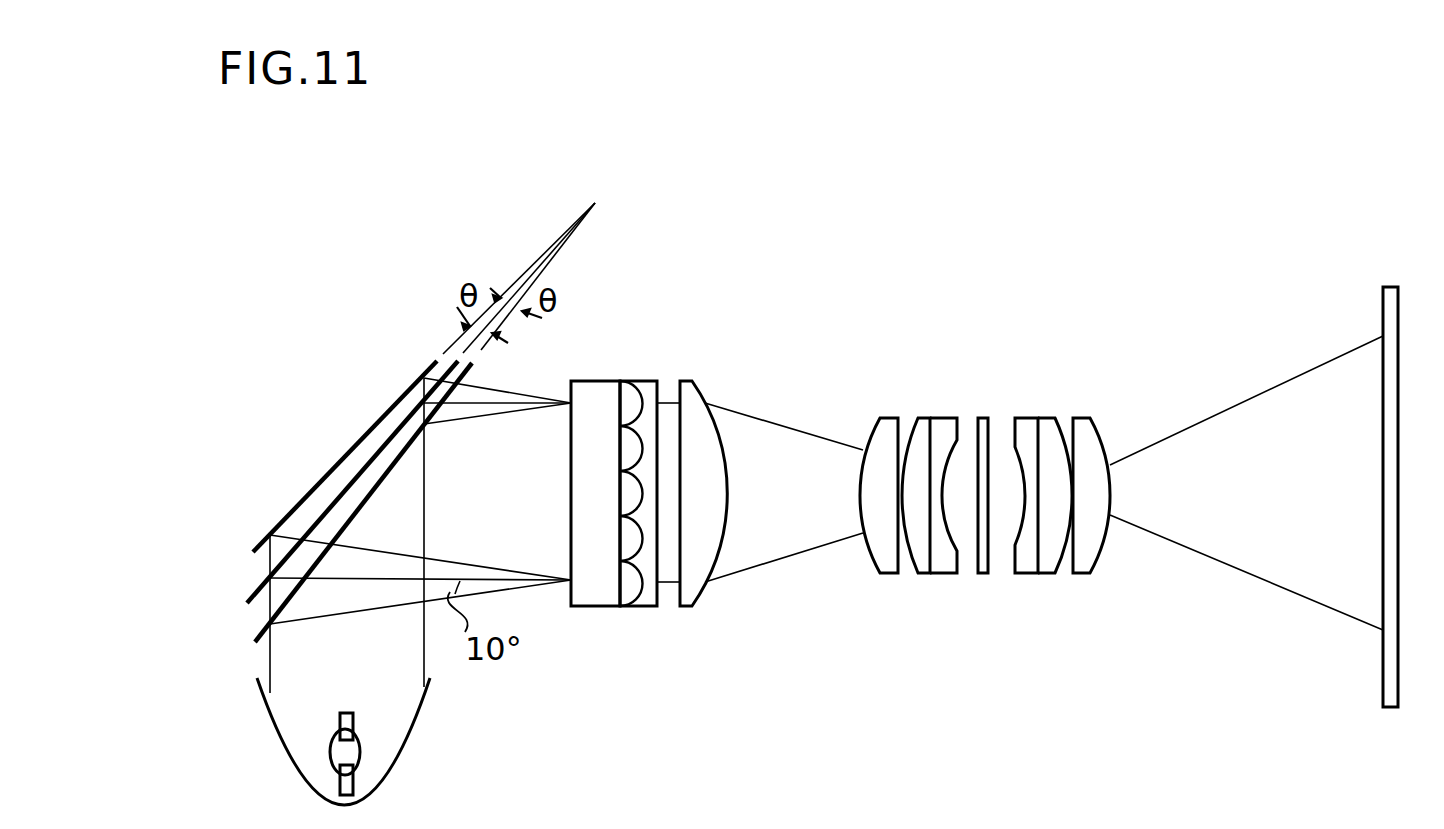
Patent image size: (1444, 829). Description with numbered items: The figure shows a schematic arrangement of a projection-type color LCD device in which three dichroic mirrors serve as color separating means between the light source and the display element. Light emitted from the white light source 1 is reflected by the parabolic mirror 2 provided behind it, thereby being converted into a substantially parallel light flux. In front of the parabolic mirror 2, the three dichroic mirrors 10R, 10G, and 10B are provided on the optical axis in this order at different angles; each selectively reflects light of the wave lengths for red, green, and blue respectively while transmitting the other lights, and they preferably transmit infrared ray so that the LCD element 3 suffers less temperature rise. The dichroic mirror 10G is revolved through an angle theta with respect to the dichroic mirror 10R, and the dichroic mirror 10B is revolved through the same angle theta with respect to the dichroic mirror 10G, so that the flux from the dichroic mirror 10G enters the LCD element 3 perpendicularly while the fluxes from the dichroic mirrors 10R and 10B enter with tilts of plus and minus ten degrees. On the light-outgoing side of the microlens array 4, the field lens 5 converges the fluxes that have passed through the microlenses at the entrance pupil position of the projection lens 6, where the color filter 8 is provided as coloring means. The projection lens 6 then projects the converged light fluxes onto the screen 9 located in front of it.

The white light source 1 is at (360, 762).
The parabolic mirror 2 is at (288, 768).
The LCD element 3 is at (620, 378).
The microlens array 4 is at (647, 381).
The field lens 5 is at (690, 380).
The projection lens 6 is at (1097, 413).
The color filter 8 is at (983, 575).
The screen 9 is at (1398, 372).
The dichroic mirror 10B is at (262, 548).
The dichroic mirror 10G is at (255, 598).
The dichroic mirror 10R is at (258, 639).